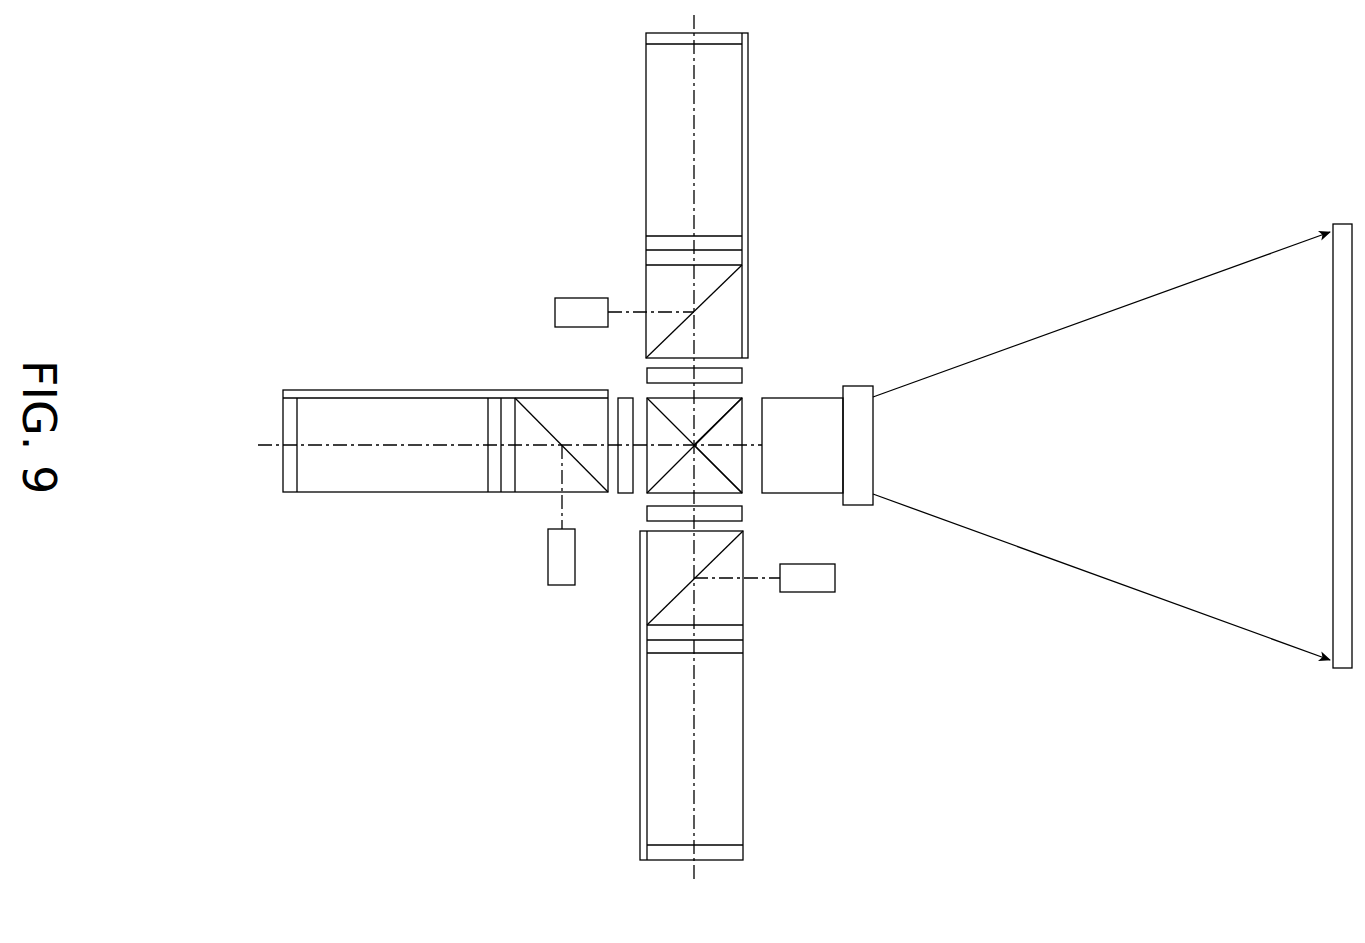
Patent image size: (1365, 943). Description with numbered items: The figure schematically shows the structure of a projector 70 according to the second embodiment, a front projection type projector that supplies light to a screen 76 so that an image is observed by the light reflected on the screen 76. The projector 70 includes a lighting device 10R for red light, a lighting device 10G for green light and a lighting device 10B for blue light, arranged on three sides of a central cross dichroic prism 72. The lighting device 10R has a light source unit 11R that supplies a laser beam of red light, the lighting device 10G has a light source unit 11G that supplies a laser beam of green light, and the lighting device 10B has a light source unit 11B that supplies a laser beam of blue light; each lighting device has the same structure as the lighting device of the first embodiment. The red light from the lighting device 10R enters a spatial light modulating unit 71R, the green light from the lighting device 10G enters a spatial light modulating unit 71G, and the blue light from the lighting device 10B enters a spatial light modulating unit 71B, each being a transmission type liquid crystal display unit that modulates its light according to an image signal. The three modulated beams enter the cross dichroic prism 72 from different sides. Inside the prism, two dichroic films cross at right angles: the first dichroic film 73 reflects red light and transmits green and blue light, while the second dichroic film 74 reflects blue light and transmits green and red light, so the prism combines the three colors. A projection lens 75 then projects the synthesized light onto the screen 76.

The projector 70 is at (525, 145).
The lighting device for R light 10R is at (749, 138).
The lighting device for G light 10G is at (424, 390).
The lighting device for B light 10B is at (640, 720).
The light source unit for R light 11R is at (583, 300).
The light source unit for G light 11G is at (558, 558).
The light source unit for B light 11B is at (808, 595).
The spatial light modulating unit for R light 71R is at (742, 377).
The spatial light modulating unit for G light 71G is at (625, 402).
The spatial light modulating unit for B light 71B is at (742, 513).
The cross dichroic prism 72 is at (650, 400).
The first dichroic film 73 is at (735, 483).
The second dichroic film 74 is at (737, 412).
The projection lens 75 is at (866, 386).
The screen 76 is at (1342, 222).